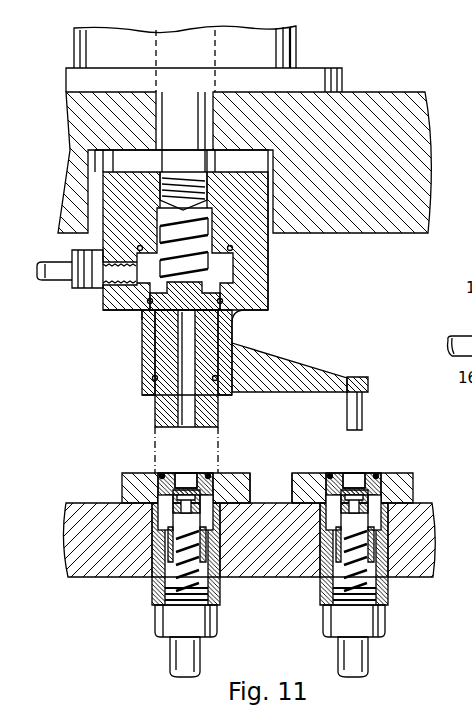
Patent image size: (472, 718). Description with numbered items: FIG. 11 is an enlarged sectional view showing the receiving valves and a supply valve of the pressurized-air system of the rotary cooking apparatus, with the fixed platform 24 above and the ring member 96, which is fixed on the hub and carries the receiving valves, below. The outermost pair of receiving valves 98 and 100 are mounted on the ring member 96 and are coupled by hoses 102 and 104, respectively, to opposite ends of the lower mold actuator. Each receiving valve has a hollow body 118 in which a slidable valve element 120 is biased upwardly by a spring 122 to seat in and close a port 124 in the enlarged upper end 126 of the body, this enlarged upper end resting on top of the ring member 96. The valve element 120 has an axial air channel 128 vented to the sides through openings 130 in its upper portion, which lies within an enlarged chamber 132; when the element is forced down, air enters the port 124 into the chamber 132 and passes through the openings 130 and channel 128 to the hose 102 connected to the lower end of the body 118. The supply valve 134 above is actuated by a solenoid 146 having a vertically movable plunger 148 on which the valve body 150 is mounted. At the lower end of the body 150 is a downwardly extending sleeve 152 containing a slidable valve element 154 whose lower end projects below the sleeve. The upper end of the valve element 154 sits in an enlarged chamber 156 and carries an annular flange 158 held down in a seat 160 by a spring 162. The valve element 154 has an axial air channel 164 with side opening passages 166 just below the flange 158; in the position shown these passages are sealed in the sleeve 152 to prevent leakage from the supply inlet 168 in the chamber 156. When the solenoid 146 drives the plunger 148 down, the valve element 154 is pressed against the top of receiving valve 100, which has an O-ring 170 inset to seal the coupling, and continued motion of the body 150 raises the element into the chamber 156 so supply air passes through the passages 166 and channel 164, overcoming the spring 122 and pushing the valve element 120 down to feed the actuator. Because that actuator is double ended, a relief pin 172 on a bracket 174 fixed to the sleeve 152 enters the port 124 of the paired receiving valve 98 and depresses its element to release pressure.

The fixed platform 24 is at (367, 92).
The ring member 96 is at (93, 572).
The receiving valve 98 is at (413, 473).
The receiving valve 100 is at (127, 482).
The hose 102 is at (370, 655).
The hose 104 is at (173, 650).
The hollow body 118 is at (157, 585).
The slidable valve element 120 is at (168, 543).
The spring 122 is at (197, 580).
The port 124 is at (183, 473).
The enlarged upper end 126 is at (252, 474).
The axial air channel 128 is at (199, 548).
The openings 130 is at (173, 510).
The enlarged chamber 132 is at (207, 518).
The supply valve 134 is at (270, 262).
The solenoid 146 is at (298, 35).
The plunger 148 is at (205, 100).
The valve body 150 is at (270, 287).
The sleeve 152 is at (153, 365).
The slidable valve element 154 is at (160, 402).
The enlarged chamber 156 is at (233, 290).
The annular flange 158 is at (240, 302).
The seat 160 is at (235, 315).
The spring 162 is at (212, 224).
The axial air channel 164 is at (222, 406).
The side opening passages 166 is at (155, 315).
The supply inlet 168 is at (83, 292).
The O-ring 170 is at (160, 475).
The relief pin 172 is at (359, 418).
The bracket 174 is at (310, 372).